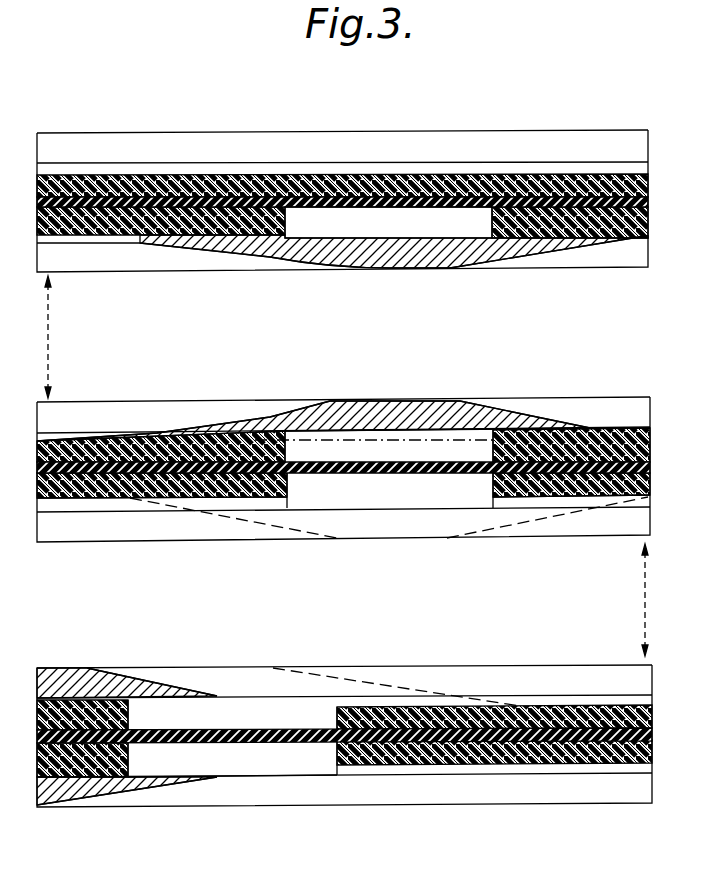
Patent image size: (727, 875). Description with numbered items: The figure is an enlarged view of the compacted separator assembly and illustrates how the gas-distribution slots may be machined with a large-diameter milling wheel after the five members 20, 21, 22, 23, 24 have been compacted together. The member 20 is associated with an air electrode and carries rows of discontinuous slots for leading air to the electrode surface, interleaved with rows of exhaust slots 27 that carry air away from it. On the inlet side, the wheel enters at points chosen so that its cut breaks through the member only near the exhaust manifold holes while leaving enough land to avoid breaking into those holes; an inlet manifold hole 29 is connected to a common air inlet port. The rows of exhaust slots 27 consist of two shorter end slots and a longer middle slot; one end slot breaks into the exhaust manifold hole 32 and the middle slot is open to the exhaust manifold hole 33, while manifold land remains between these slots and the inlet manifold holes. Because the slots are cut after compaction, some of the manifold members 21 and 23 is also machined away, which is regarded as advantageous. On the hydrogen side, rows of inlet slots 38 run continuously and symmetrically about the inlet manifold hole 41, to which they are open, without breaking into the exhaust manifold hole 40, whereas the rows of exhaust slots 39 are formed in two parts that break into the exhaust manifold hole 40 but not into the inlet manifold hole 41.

The member 20 is at (565, 257).
The manifold member 21 is at (608, 225).
The member 22 is at (535, 197).
The manifold member 23 is at (575, 165).
The member 24 is at (447, 140).
The exhaust slots 27 is at (343, 793).
The inlet manifold hole 29 is at (345, 218).
The exhaust manifold hole 32 is at (182, 763).
The exhaust manifold hole 33 is at (323, 500).
The inlet slots 38 is at (395, 682).
The exhaust slots 39 is at (220, 412).
The exhaust manifold hole 40 is at (207, 712).
The inlet manifold hole 41 is at (355, 455).